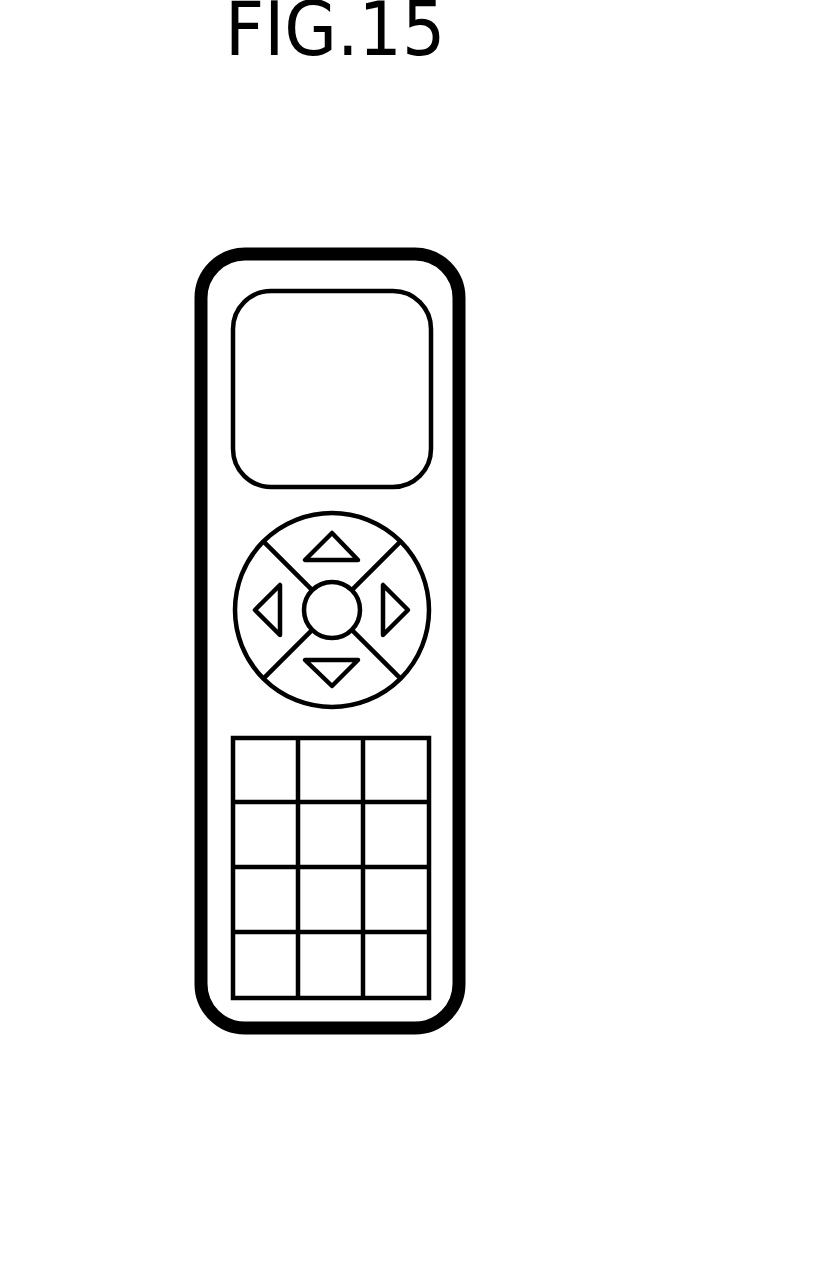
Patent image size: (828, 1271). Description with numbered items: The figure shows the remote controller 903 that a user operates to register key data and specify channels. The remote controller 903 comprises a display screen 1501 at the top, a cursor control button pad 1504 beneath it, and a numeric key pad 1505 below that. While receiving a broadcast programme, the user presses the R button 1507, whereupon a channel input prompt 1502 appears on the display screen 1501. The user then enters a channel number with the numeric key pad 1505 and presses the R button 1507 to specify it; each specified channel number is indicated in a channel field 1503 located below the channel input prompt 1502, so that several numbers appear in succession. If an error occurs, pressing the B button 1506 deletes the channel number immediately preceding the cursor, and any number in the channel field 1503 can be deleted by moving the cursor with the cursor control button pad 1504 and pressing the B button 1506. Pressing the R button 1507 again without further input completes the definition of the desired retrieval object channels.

The remote controller 903 is at (465, 310).
The display screen 1501 is at (430, 410).
The channel input prompt 1502 is at (267, 357).
The channel field 1503 is at (260, 421).
The cursor control button pad 1504 is at (428, 607).
The numeric key pad 1505 is at (430, 827).
The B button 1506 is at (323, 998).
The R button 1507 is at (395, 998).